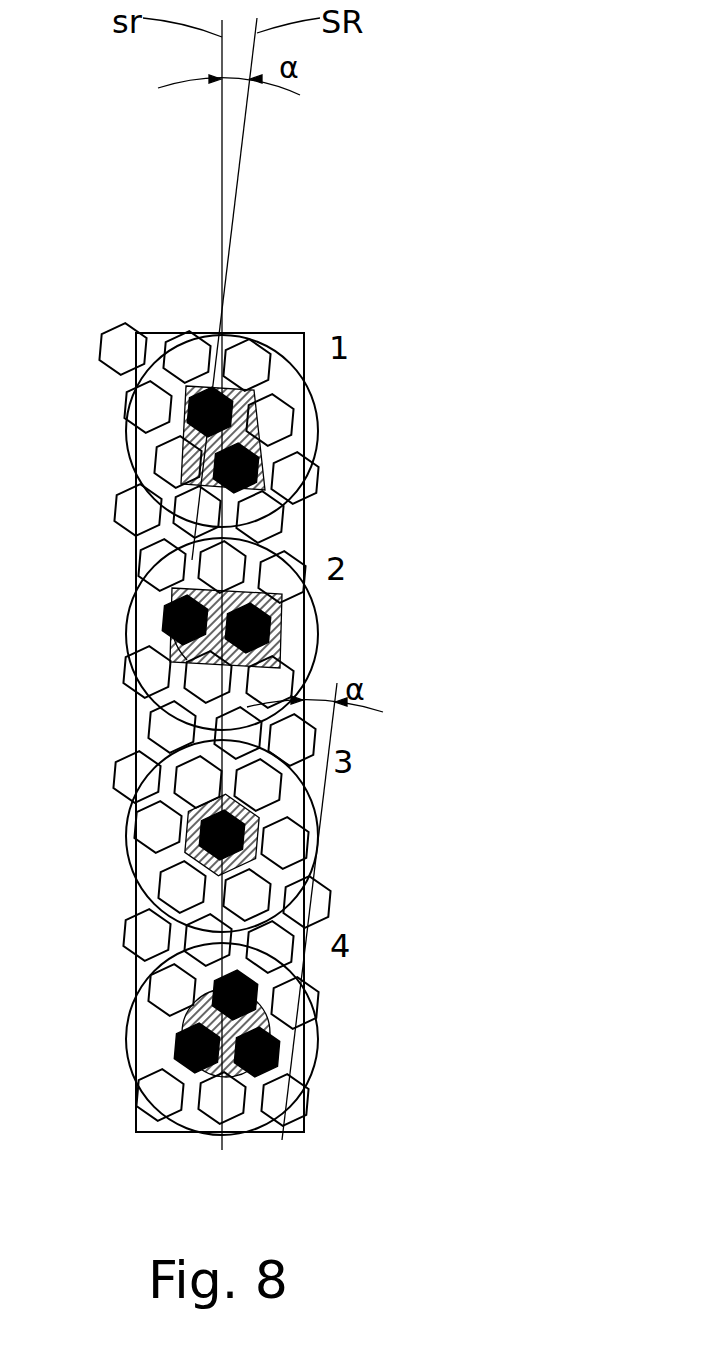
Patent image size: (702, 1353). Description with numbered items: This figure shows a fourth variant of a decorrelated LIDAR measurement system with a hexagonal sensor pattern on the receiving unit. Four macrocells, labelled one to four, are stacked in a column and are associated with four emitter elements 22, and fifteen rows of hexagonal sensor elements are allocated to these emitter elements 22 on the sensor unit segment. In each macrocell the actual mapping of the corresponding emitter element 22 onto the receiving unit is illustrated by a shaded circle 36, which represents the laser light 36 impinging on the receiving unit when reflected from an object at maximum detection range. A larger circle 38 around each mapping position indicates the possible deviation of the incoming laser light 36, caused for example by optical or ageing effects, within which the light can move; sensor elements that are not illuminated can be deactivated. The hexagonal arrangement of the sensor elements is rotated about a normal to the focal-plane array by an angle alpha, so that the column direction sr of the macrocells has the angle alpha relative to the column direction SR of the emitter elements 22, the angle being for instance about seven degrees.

The emitter elements 22 is at (283, 1153).
The circle representing the laser light mapping 36 is at (263, 452).
The deviation circle 38 is at (280, 362).